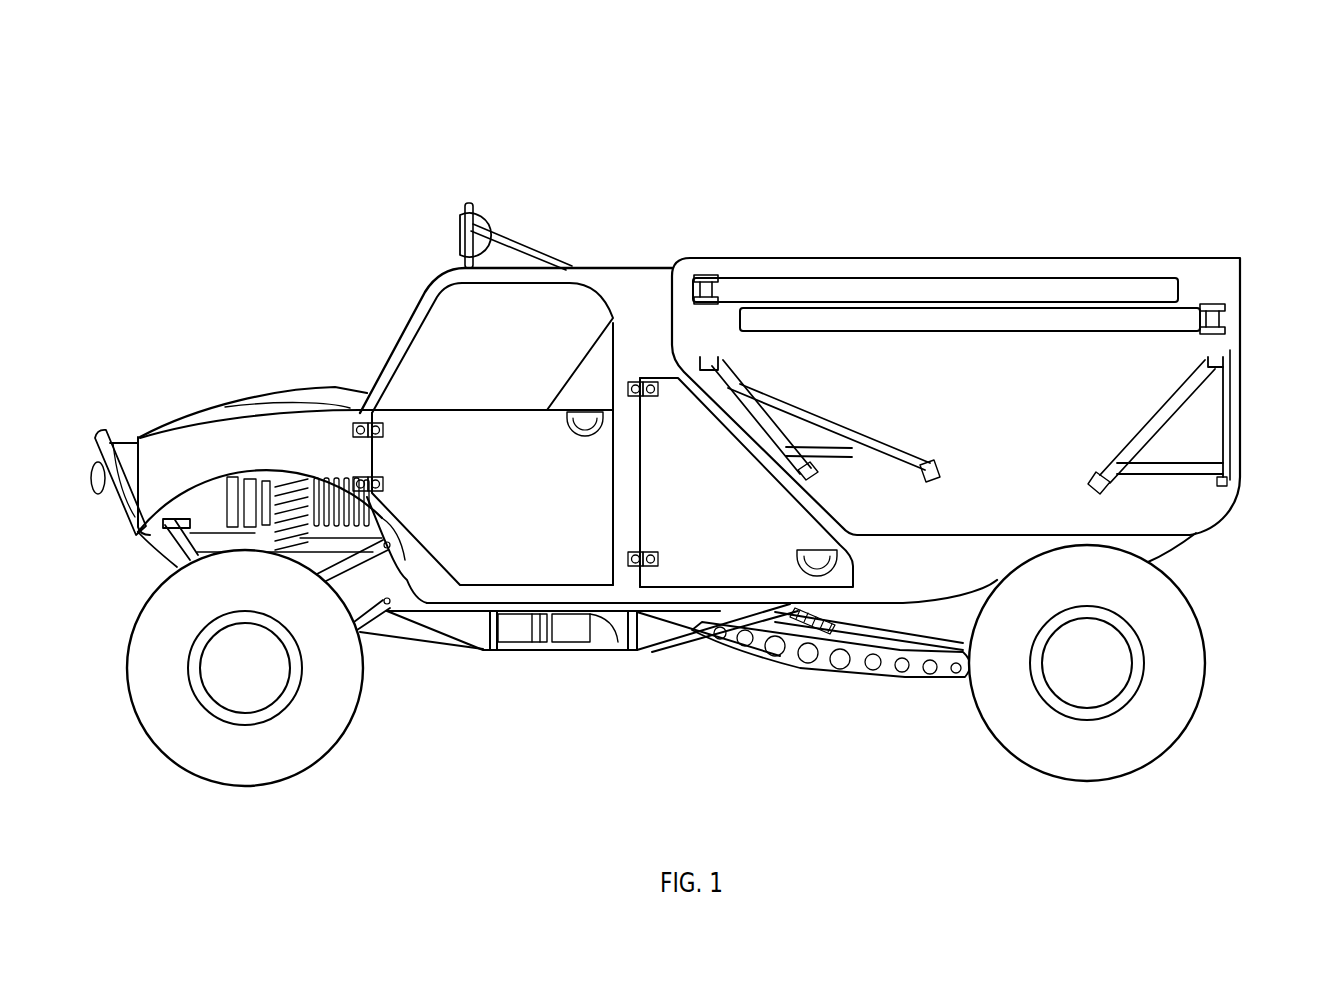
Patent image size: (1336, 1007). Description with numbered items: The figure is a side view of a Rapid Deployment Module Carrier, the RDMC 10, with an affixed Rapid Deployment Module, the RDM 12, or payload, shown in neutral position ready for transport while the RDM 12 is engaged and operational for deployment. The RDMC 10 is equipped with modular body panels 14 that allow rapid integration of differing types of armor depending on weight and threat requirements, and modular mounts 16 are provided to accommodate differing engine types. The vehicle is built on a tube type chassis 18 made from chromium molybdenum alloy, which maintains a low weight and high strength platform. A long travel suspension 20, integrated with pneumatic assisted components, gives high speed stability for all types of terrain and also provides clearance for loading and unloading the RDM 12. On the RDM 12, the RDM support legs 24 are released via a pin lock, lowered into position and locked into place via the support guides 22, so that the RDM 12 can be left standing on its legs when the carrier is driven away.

The RDMC 10 is at (955, 185).
The Rapid Deployment Module 12 is at (1190, 254).
The modular body panels 14 is at (640, 309).
The modular mounts 16 is at (228, 503).
The tube type chassis 18 is at (600, 655).
The long travel suspension 20 is at (368, 567).
The support guides 22 is at (727, 377).
The RDM support legs 24 is at (990, 290).